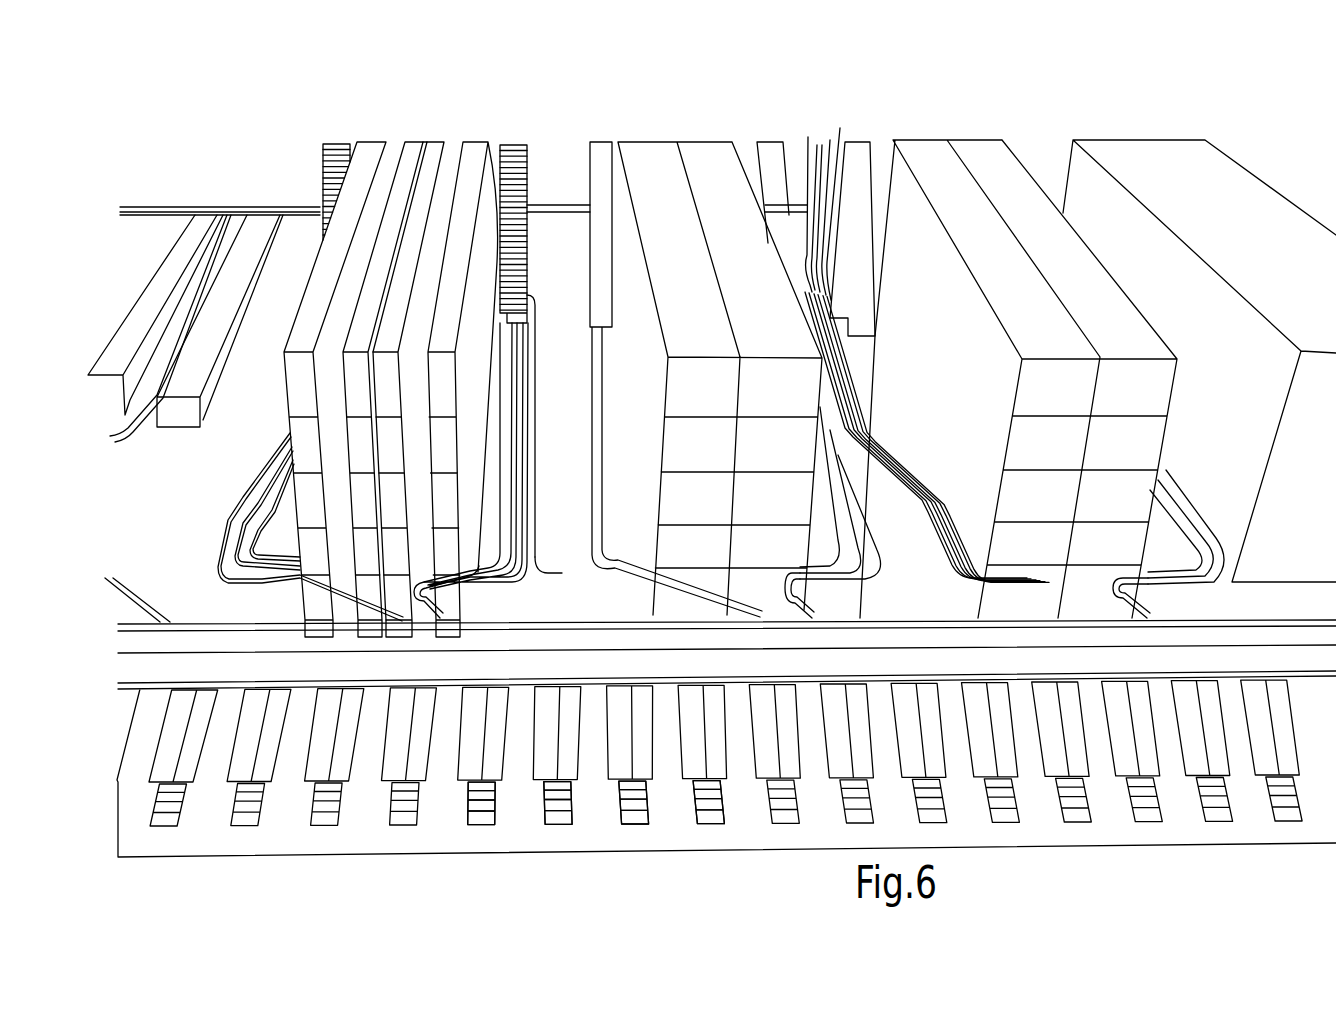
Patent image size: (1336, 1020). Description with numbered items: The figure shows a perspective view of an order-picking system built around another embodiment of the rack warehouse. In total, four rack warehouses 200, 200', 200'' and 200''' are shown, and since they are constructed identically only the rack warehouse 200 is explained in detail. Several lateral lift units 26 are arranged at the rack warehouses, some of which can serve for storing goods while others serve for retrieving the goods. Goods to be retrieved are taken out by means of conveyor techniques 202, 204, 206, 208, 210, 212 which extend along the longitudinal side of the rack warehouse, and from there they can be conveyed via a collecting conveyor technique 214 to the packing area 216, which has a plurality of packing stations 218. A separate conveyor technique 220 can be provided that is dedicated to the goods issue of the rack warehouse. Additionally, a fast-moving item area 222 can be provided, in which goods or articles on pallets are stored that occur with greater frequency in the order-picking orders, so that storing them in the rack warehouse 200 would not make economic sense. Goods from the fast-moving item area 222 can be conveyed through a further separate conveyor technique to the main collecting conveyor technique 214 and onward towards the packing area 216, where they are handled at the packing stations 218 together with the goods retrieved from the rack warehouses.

The fast-moving item area 222 is at (148, 250).
The separate conveyor technique 220 is at (275, 204).
The lateral lift unit 26 is at (515, 132).
The rack warehouse 200 is at (391, 337).
The rack warehouse 200' is at (735, 329).
The rack warehouse 200'' is at (1018, 335).
The rack warehouse 200''' is at (1199, 332).
The conveyor technique 202 is at (216, 552).
The conveyor technique 204 is at (250, 510).
The conveyor technique 206 is at (290, 496).
The conveyor technique 208 is at (499, 548).
The conveyor technique 210 is at (536, 557).
The conveyor technique 212 is at (538, 508).
The collecting conveyor technique 214 is at (856, 612).
The packing area 216 is at (112, 727).
The packing station 218 is at (492, 833).